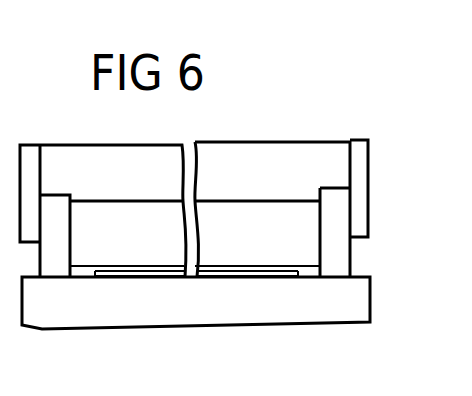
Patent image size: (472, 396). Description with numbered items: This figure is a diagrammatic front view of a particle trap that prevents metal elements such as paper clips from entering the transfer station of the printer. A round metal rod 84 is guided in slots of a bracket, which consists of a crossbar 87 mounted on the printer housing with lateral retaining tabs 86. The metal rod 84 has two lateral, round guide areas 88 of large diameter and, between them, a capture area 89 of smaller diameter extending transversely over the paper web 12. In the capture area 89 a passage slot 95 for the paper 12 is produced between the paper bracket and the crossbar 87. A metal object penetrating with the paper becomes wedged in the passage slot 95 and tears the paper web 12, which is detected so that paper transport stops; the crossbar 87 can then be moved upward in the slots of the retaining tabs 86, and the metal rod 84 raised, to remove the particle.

The paper web 12 is at (257, 277).
The metal rod 84 is at (296, 188).
The lateral retaining tab 86 is at (360, 198).
The crossbar 87 is at (243, 162).
The guide area 88 is at (53, 258).
The capture area 89 is at (133, 240).
The passage slot 95 is at (308, 272).